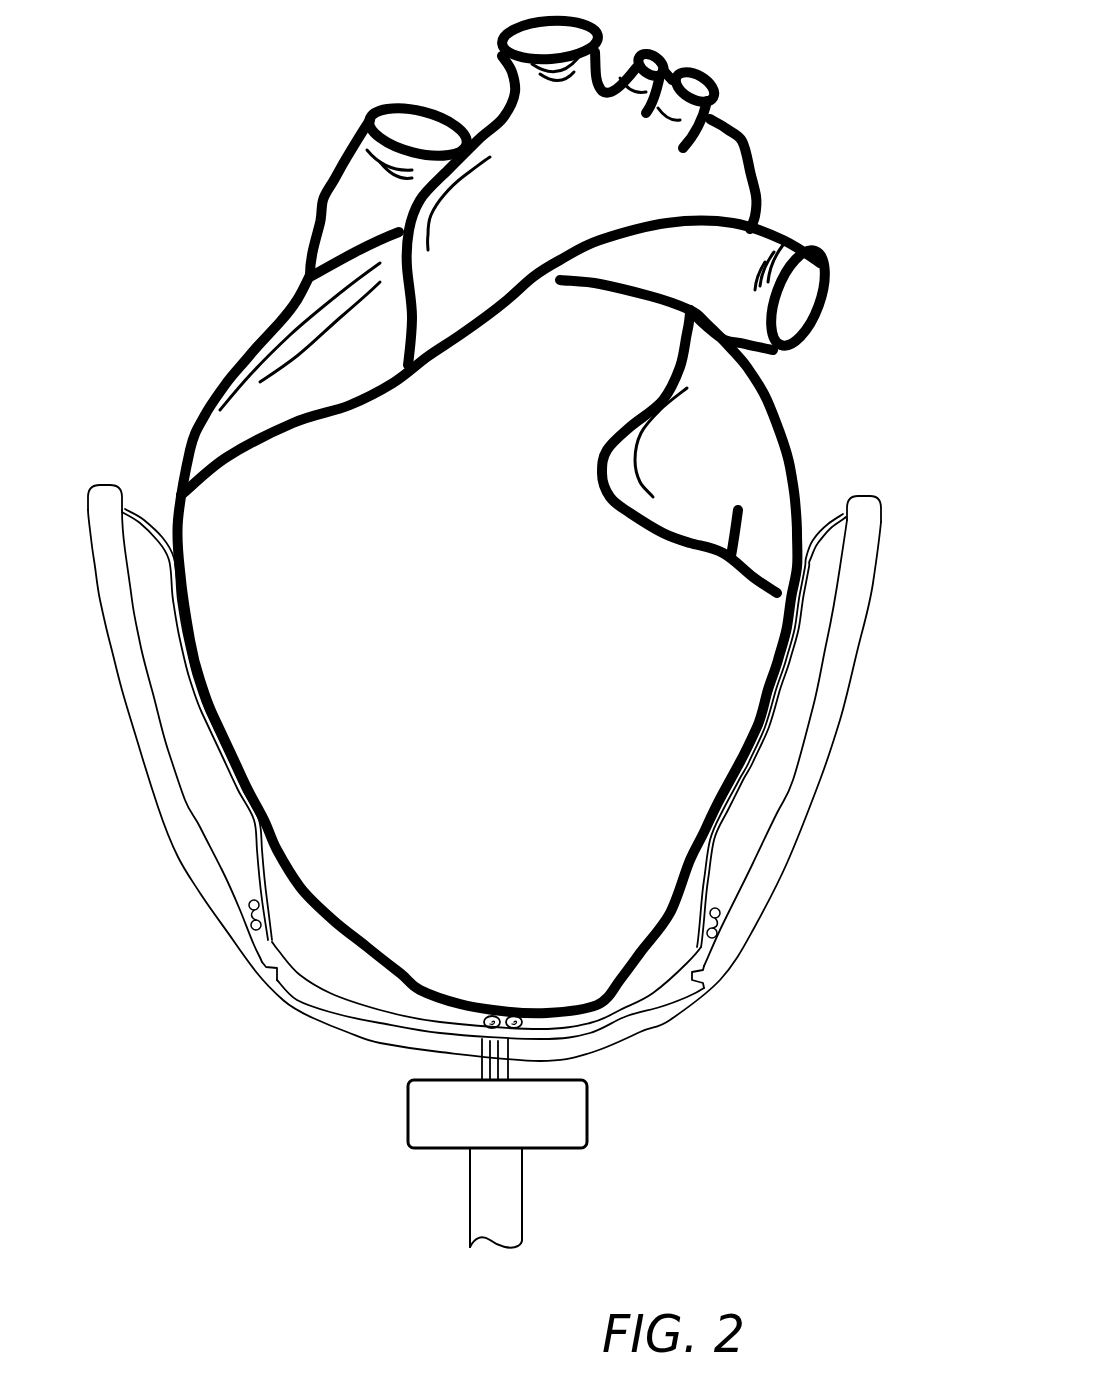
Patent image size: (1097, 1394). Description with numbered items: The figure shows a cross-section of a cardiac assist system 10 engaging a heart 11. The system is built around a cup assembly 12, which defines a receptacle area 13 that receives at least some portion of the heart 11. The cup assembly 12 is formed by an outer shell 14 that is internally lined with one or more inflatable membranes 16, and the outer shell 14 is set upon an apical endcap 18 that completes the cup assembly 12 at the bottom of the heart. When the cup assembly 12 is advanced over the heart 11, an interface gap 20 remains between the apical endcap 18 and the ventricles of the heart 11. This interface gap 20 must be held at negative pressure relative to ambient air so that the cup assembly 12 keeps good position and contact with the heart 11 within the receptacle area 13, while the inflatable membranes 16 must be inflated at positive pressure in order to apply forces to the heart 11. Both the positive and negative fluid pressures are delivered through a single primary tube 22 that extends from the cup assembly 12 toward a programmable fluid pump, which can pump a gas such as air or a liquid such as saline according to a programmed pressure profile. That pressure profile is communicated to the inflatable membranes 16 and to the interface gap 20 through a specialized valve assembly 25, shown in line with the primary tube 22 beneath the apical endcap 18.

The cardiac assist system 10 is at (878, 505).
The heart 11 is at (270, 337).
The cup assembly 12 is at (660, 1043).
The receptacle area 13 is at (157, 517).
The outer shell 14 is at (860, 642).
The inflatable membranes 16 is at (830, 525).
The apical endcap 18 is at (575, 1045).
The interface gap 20 is at (353, 977).
The primary tube 22 is at (483, 1210).
The valve assembly 25 is at (407, 1118).